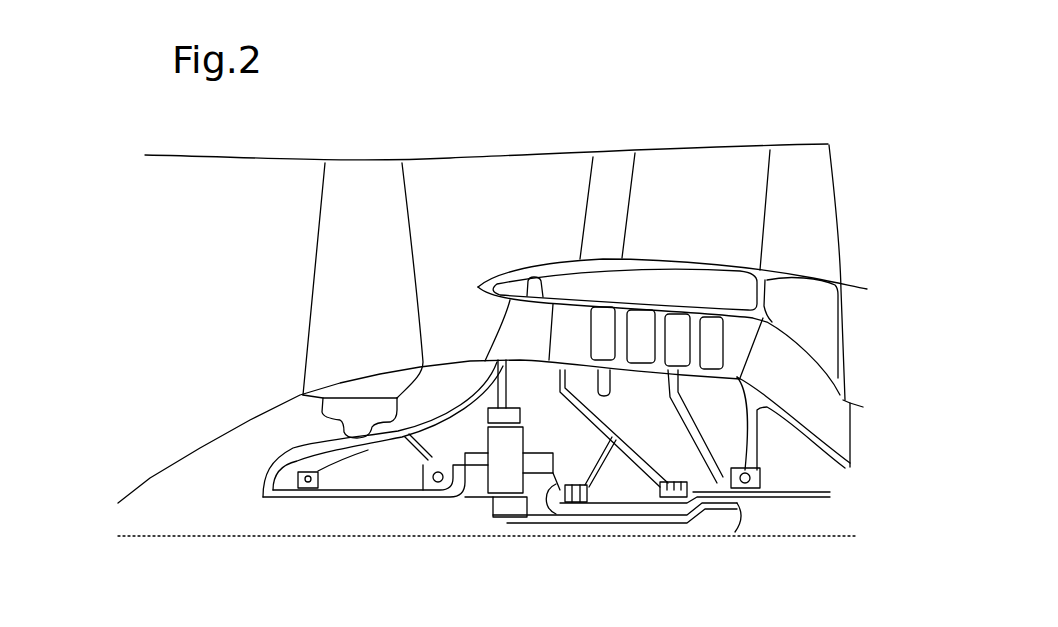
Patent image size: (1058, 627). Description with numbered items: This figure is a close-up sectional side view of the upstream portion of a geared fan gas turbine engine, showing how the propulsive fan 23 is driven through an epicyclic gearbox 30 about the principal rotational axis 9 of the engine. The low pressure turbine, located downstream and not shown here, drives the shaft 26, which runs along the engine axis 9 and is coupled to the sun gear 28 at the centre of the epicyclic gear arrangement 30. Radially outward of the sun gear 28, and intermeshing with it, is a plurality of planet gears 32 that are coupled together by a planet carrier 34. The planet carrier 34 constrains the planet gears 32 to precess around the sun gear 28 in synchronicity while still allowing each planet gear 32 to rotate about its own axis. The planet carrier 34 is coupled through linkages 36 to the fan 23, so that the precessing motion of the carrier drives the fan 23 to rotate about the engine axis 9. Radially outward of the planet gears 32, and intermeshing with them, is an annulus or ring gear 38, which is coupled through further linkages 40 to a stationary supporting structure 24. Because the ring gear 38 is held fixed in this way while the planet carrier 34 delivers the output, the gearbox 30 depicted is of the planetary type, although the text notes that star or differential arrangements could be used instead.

The principal rotational axis 9 is at (271, 537).
The propulsive fan 23 is at (336, 312).
The stationary supporting structure 24 is at (513, 326).
The shaft 26 is at (730, 500).
The sun gear 28 is at (503, 512).
The epicyclic gearbox 30 is at (467, 495).
The planet gears 32 is at (487, 490).
The planet carrier 34 is at (547, 502).
The linkages 36 is at (440, 494).
The ring gear 38 is at (490, 418).
The linkages 40 is at (514, 383).